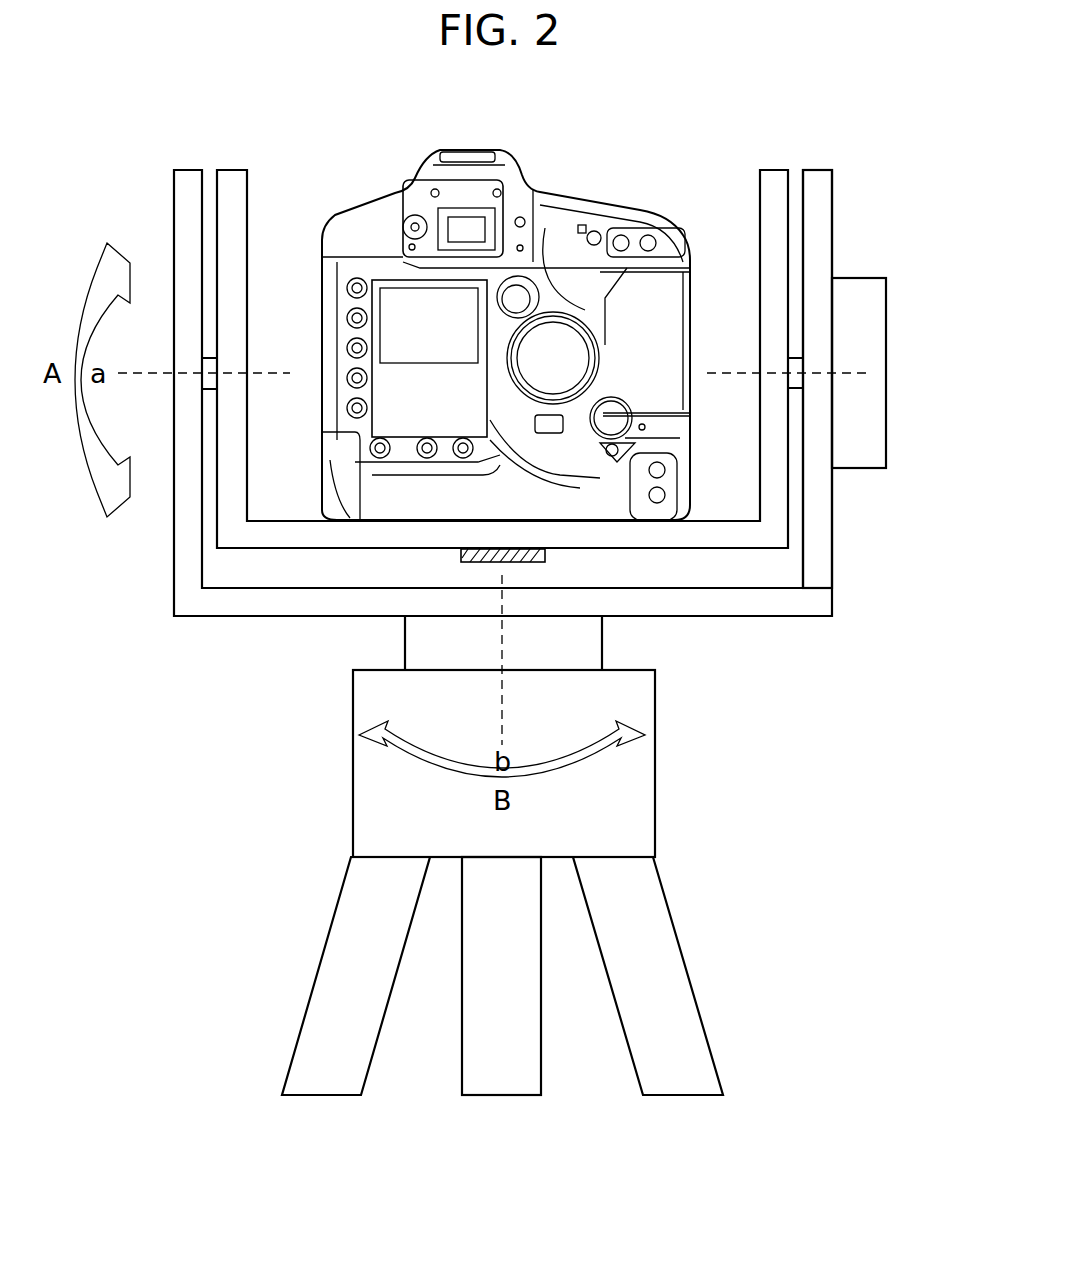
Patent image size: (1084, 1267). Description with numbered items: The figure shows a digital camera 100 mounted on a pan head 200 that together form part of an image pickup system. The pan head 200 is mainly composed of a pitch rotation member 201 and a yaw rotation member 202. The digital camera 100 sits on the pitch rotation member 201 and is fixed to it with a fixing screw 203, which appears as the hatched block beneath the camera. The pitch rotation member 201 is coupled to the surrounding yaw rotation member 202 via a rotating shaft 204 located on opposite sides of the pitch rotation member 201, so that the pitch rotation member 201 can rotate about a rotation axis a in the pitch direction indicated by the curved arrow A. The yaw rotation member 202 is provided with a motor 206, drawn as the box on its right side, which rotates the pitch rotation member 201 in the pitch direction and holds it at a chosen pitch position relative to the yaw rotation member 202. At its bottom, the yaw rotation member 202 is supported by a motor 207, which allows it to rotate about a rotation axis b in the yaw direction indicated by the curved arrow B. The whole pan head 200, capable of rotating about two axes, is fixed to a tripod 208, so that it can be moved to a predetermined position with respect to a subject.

The digital camera 100 is at (520, 168).
The pan head 200 is at (785, 617).
The pitch rotation member 201 is at (247, 172).
The yaw rotation member 202 is at (832, 172).
The fixing screw 203 is at (520, 563).
The rotating shaft 204 is at (210, 358).
The motor 206 is at (886, 340).
The motor 207 is at (602, 640).
The tripod 208 is at (655, 770).